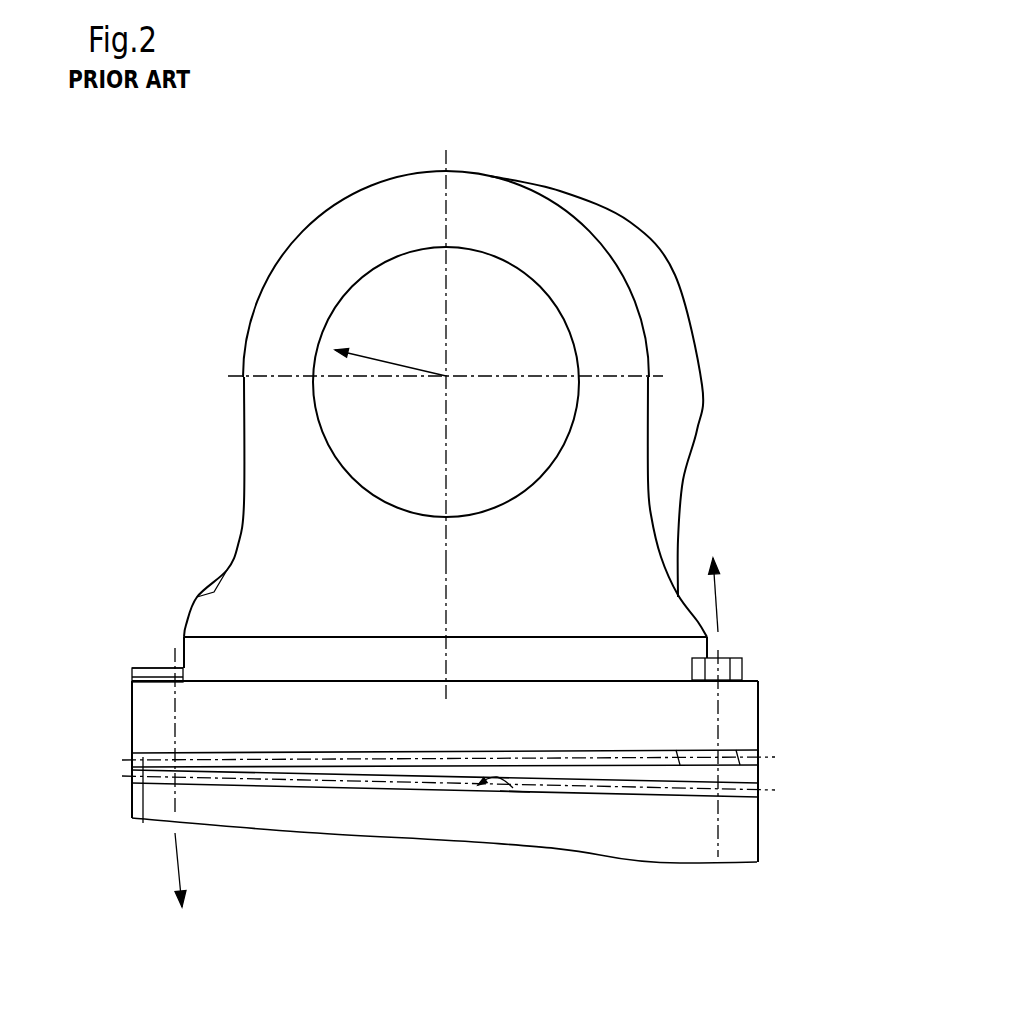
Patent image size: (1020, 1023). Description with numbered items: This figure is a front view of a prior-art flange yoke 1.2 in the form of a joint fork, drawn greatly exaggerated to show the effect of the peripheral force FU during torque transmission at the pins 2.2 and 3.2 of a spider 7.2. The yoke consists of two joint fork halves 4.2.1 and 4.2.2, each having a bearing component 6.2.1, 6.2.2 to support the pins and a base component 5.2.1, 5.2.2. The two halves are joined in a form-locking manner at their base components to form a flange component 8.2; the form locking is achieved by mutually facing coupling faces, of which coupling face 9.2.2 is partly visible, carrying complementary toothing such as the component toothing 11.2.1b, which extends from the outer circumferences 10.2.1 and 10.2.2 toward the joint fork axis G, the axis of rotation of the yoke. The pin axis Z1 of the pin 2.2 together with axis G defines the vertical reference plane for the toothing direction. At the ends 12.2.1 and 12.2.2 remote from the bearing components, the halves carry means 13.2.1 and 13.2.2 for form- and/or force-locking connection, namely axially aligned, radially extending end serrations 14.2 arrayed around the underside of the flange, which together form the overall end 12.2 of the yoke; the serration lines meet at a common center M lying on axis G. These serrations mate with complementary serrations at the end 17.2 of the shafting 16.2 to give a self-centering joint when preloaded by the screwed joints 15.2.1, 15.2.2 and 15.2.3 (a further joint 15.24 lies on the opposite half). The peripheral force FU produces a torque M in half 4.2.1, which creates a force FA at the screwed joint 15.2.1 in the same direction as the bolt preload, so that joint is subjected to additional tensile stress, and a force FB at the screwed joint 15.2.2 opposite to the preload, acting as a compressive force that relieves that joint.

The flange yoke 1.2 is at (504, 452).
The pin 2.2 is at (451, 311).
The pin 3.2 is at (446, 382).
The spider 7.2 is at (500, 290).
The bearing component 6.2.1 is at (285, 277).
The bearing component 6.2.2 is at (683, 292).
The first joint fork half 4.2.1 is at (230, 480).
The second joint fork half 4.2.2 is at (712, 490).
The base component 5.2.1 is at (758, 683).
The base component 5.2.2 is at (105, 603).
The flange component 8.2 is at (447, 791).
The coupling face 9.2.2 is at (143, 672).
The outer circumference 10.2.1 is at (128, 733).
The outer circumference 10.2.2 is at (760, 750).
The component toothing 11.2.1b is at (162, 670).
The overall end of the flange yoke 12.2 is at (738, 752).
The end 12.2.1 is at (678, 752).
The end 12.2.2 is at (788, 855).
The means for form- and/or force-locking connection 13.2.1 is at (481, 861).
The means for form- and/or force-locking connection 13.2.2 is at (448, 868).
The end serrations 14.2 is at (143, 823).
The bolt 15.24 is at (151, 737).
The screwed joint 15.2.1 is at (737, 665).
The screwed joint 15.2.2 is at (172, 803).
The screwed joint 15.2.3 is at (717, 652).
The shafting 16.2 is at (447, 791).
The end of the shafting 17.2 is at (513, 788).
The pin axis Z1 is at (446, 376).
The joint fork axis G is at (446, 577).
The torque / center point M is at (463, 778).
The peripheral force FU is at (390, 351).
The force at screwed joint FA is at (714, 578).
The force at screwed joint FB is at (183, 875).